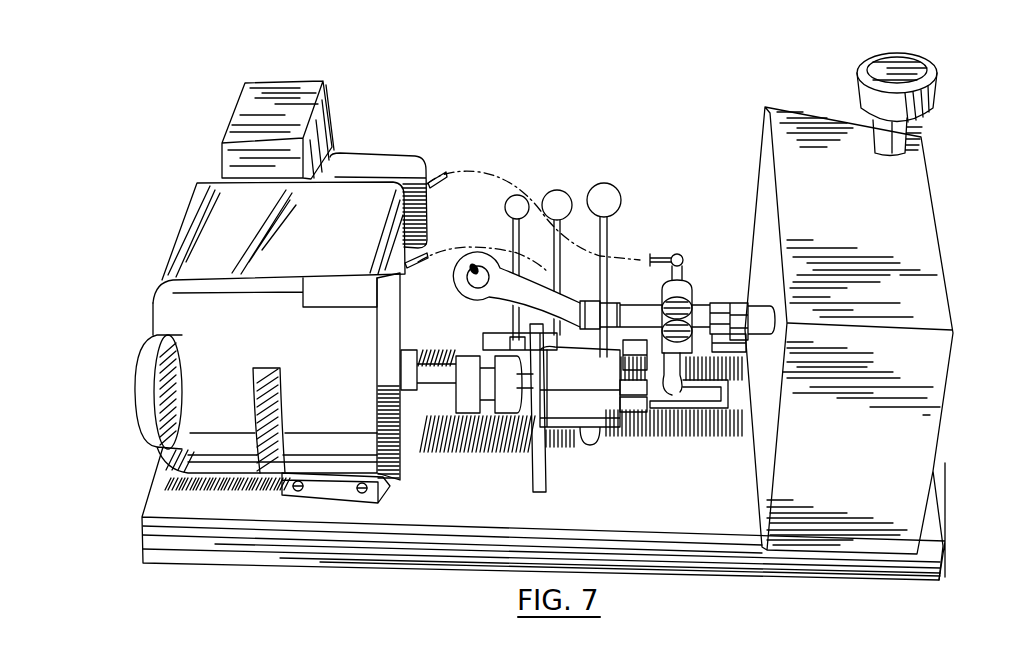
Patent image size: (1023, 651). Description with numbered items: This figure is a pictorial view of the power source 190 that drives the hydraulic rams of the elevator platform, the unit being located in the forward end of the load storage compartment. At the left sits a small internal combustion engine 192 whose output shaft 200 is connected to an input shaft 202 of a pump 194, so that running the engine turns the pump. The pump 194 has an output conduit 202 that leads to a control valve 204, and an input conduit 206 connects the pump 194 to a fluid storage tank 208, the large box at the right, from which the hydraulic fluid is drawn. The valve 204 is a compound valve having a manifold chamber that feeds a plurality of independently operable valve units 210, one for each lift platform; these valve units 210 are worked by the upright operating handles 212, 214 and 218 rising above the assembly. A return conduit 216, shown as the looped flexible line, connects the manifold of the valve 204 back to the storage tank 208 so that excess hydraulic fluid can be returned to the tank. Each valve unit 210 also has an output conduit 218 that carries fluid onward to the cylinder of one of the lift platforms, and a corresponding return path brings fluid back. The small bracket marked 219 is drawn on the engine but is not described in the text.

The power source 190 is at (566, 89).
The internal combustion engine 192 is at (172, 313).
The pump 194 is at (593, 411).
The output shaft 200 is at (443, 402).
The input shaft 202 is at (522, 432).
The control valve 204 is at (632, 320).
The input conduit 206 is at (675, 366).
The fluid storage tank 208 is at (871, 466).
The valve unit 210 is at (563, 454).
The operating handle 212 is at (505, 207).
The operating handle 214 is at (557, 190).
The return conduit 216 is at (482, 294).
The operating handle 218 is at (611, 191).
The bracket 219 is at (432, 172).